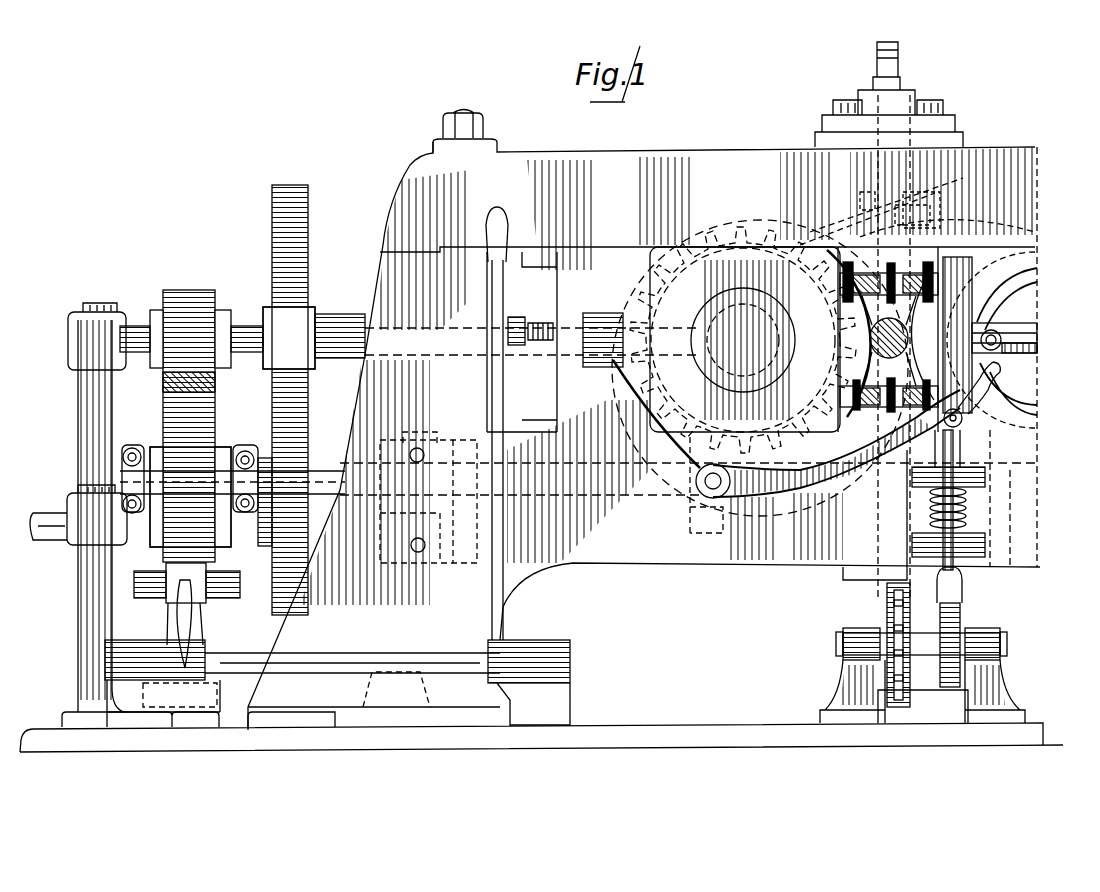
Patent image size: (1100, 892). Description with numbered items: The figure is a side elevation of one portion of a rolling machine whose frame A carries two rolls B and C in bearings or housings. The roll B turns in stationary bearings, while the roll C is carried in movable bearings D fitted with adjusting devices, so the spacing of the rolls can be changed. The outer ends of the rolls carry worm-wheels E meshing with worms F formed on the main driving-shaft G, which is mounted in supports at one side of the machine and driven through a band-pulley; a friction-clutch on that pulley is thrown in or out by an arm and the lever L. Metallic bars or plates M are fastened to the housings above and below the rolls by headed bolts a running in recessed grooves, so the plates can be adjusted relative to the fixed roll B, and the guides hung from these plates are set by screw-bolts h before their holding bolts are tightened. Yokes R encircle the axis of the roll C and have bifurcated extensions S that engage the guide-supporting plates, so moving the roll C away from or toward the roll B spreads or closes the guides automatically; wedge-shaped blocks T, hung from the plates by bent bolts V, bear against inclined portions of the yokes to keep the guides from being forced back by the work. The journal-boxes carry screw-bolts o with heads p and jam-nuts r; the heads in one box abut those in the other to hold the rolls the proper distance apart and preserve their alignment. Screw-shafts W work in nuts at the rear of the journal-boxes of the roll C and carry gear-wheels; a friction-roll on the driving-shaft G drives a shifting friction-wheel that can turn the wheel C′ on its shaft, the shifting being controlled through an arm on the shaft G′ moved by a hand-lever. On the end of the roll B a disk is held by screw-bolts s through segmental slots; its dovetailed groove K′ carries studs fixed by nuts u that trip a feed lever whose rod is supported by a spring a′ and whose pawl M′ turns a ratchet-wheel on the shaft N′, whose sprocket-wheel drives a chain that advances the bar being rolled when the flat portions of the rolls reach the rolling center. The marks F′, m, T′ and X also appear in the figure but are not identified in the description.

The frame A is at (591, 412).
The roll B is at (888, 339).
The roll C is at (605, 390).
The wheel C′ is at (190, 497).
The movable bearings D is at (535, 342).
The worm-wheels E is at (743, 340).
The worms F is at (690, 520).
The collars F′ is at (187, 583).
The main driving-shaft G is at (345, 478).
The shaft G′ is at (262, 658).
The dovetailed groove K′ is at (1008, 370).
The lever L is at (786, 374).
The bars or plates M is at (622, 405).
The pawl M′ is at (962, 588).
The pin m is at (640, 392).
The shaft N′ is at (922, 675).
The screw-bolts o is at (888, 337).
The heads p is at (880, 270).
The yokes R is at (760, 360).
The jam-nut r is at (891, 342).
The screw-bolts h is at (904, 370).
The bifurcated extensions S is at (950, 190).
The screw-bolts s is at (992, 340).
The wedge-shaped blocks T is at (945, 206).
The column T′ is at (937, 448).
The nut u is at (961, 406).
The bent bolts V is at (948, 512).
The screw-shaft W is at (530, 321).
The slide X is at (900, 210).
The headed bolts a is at (889, 96).
The spring a′ is at (955, 508).